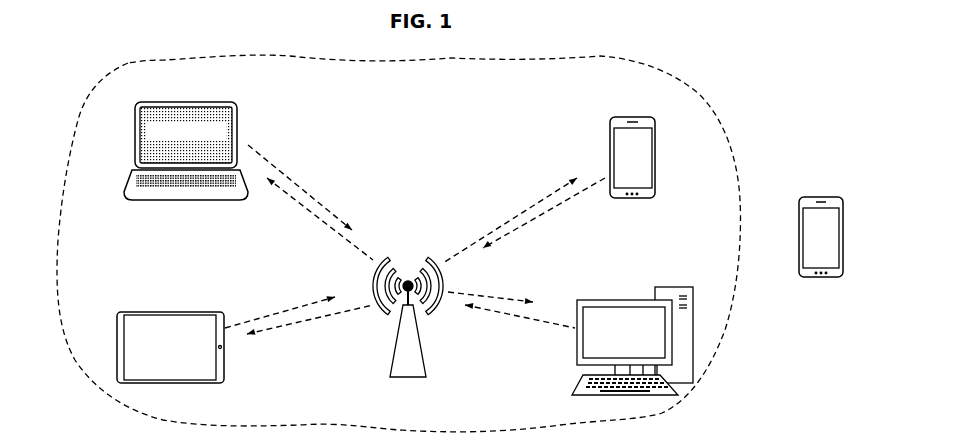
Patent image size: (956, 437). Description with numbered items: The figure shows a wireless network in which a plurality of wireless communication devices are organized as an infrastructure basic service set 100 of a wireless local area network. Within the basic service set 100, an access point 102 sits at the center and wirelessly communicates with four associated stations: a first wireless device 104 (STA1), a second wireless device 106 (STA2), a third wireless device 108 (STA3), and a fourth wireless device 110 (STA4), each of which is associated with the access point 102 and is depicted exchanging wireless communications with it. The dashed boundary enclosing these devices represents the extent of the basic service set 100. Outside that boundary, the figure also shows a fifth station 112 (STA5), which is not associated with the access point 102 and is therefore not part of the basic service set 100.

The basic service set 100 is at (130, 65).
The access point 102 is at (411, 378).
The first wireless device 104 is at (117, 340).
The second wireless device 106 is at (135, 136).
The third wireless device 108 is at (645, 117).
The fourth wireless device 110 is at (637, 300).
The fifth station 112 is at (800, 198).